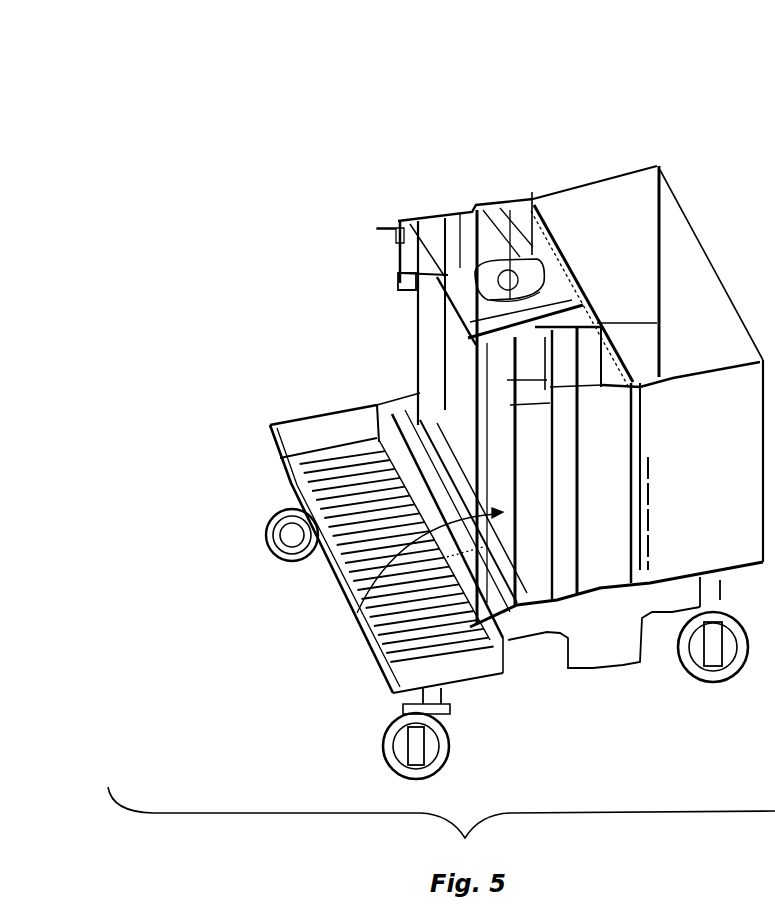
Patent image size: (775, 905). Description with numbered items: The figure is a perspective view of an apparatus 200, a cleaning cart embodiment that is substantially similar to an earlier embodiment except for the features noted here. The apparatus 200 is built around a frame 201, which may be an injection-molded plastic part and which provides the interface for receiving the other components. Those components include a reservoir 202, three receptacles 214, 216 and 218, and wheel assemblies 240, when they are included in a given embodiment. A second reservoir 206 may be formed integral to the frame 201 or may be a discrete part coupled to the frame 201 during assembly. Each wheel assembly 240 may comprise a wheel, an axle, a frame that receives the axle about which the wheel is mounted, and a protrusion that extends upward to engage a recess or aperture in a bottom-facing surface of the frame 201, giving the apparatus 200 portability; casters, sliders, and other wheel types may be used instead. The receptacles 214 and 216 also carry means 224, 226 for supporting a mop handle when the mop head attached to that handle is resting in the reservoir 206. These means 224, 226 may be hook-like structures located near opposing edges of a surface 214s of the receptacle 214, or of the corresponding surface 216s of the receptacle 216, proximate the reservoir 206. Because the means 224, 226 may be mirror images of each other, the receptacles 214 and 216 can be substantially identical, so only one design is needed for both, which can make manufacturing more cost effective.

The apparatus 200 is at (197, 135).
The frame 201 is at (583, 657).
The reservoir 202 is at (447, 338).
The reservoir 206 is at (267, 430).
The receptacle 214 is at (437, 215).
The surface of receptacle 214s is at (418, 396).
The receptacle 216 is at (603, 560).
The surface of receptacle 216s is at (357, 613).
The receptacle 218 is at (592, 182).
The means for supporting a mop handle 224 is at (390, 236).
The means for supporting a mop handle 226 is at (397, 280).
The wheel assembly 240 is at (263, 525).